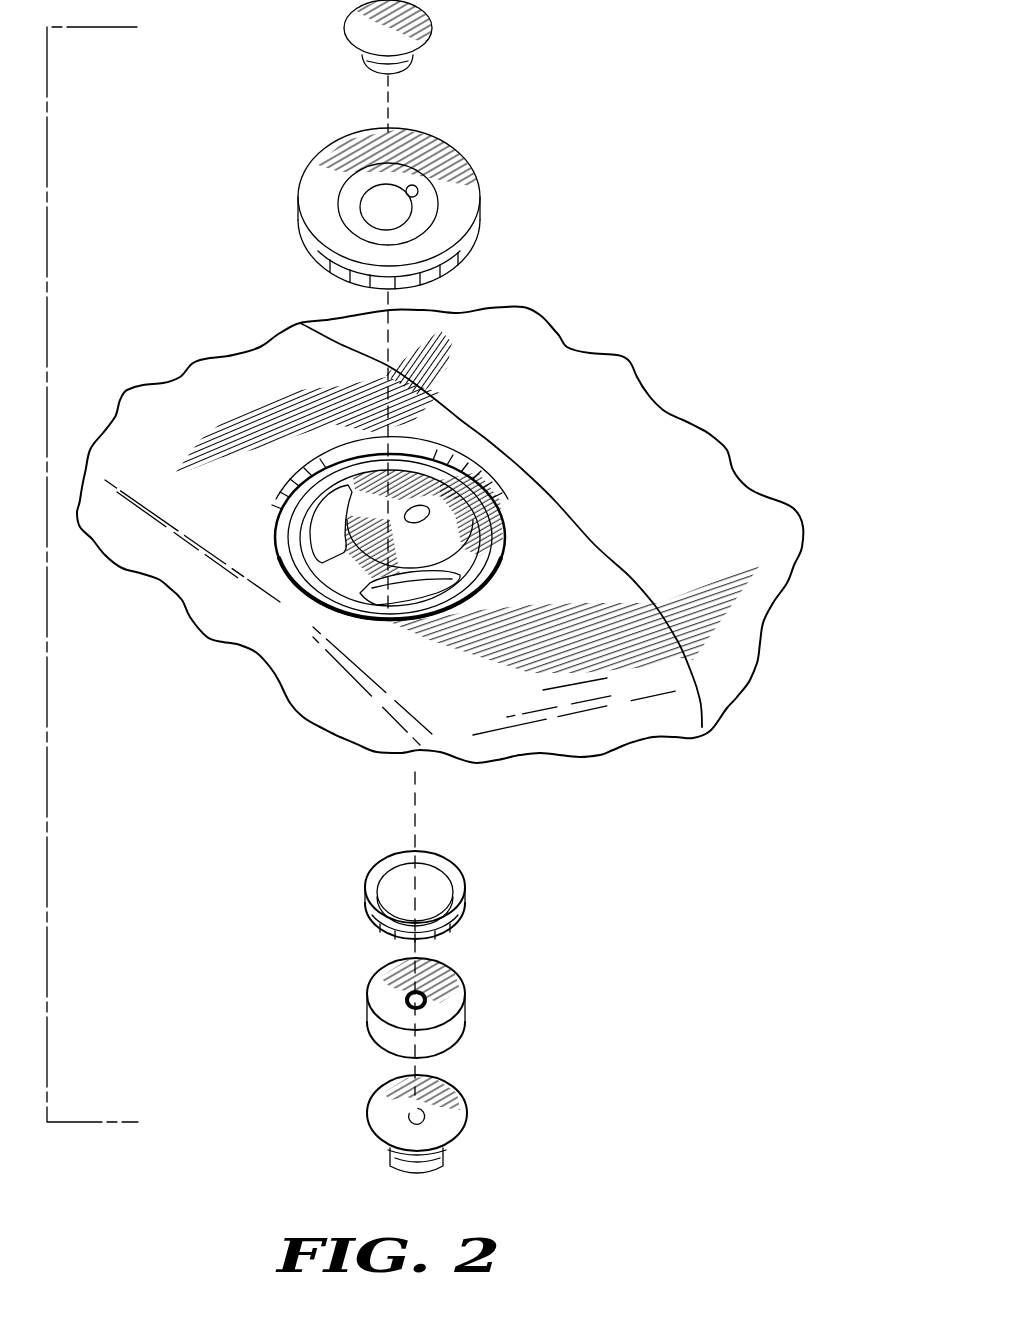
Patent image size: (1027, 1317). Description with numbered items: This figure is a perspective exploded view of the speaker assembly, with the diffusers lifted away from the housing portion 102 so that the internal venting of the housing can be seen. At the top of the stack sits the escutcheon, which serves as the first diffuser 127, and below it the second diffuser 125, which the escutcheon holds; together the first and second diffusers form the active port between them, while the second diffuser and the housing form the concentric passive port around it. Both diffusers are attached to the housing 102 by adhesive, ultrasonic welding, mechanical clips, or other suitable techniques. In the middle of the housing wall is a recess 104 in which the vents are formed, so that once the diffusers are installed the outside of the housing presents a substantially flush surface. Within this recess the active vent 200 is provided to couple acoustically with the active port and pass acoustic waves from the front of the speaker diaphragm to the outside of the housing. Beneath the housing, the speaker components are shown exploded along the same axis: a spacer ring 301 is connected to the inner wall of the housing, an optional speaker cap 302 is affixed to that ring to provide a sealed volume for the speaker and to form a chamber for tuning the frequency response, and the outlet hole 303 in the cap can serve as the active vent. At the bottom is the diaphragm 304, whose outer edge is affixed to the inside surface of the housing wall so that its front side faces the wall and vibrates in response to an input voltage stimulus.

The housing portion 102 is at (787, 589).
The recess 104 is at (360, 457).
The second diffuser 125 is at (480, 212).
The first diffuser (escutcheon) 127 is at (431, 30).
The active vent 200 is at (425, 505).
The spacer ring 301 is at (467, 906).
The speaker cap 302 is at (467, 1015).
The outlet hole 303 is at (424, 994).
The diaphragm 304 is at (465, 1122).